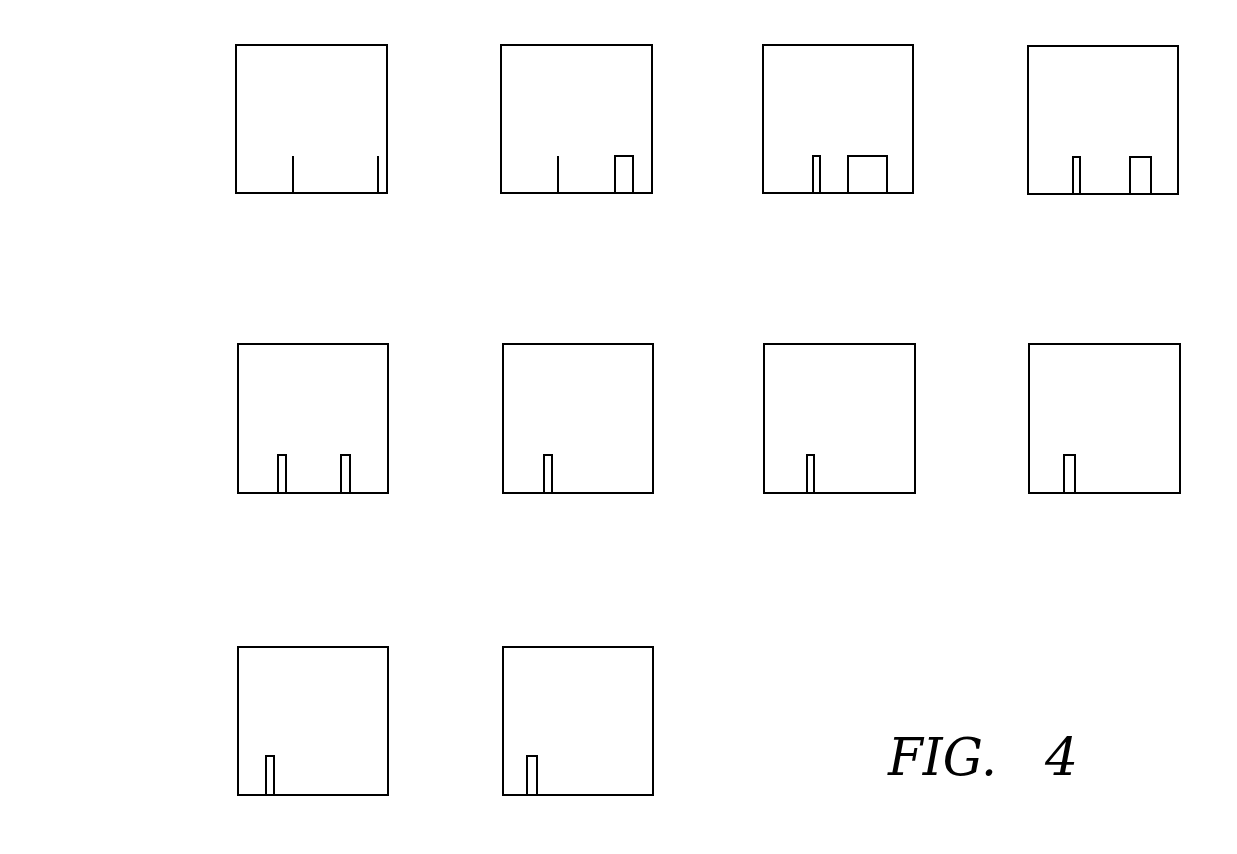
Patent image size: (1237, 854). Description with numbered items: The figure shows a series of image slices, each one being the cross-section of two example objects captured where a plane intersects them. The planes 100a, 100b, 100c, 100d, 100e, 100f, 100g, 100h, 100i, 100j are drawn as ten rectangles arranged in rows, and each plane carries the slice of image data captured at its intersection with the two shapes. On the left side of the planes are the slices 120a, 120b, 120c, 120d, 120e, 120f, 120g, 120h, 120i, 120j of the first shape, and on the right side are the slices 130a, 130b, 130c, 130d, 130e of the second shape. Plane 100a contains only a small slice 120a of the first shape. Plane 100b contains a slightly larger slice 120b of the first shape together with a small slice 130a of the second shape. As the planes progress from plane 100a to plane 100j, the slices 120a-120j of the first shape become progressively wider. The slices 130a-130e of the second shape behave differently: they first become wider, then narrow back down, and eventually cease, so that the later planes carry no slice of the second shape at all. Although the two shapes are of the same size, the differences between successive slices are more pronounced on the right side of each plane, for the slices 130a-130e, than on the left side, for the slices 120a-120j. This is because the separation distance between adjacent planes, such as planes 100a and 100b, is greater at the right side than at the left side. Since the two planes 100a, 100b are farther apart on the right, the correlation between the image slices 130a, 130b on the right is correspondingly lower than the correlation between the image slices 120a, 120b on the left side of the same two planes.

The plane 100a is at (311, 144).
The plane 100b is at (576, 144).
The plane 100c is at (838, 144).
The plane 100d is at (1103, 145).
The plane 100e is at (313, 444).
The plane 100f is at (578, 444).
The plane 100g is at (839, 444).
The plane 100h is at (1104, 444).
The plane 100i is at (313, 747).
The plane 100j is at (578, 747).
The slice of the first shape 120a is at (282, 163).
The slice of the first shape 120b is at (548, 165).
The slice of the first shape 120c is at (803, 165).
The slice of the first shape 120d is at (1063, 166).
The slice of the first shape 120e is at (268, 465).
The slice of the first shape 120f is at (534, 465).
The slice of the first shape 120g is at (797, 465).
The slice of the first shape 120h is at (1054, 465).
The slice of the first shape 120i is at (256, 766).
The slice of the first shape 120j is at (517, 766).
The slice of the second shape 130a is at (378, 168).
The slice of the second shape 130b is at (633, 168).
The slice of the second shape 130c is at (887, 176).
The slice of the second shape 130d is at (1151, 176).
The slice of the second shape 130e is at (350, 467).